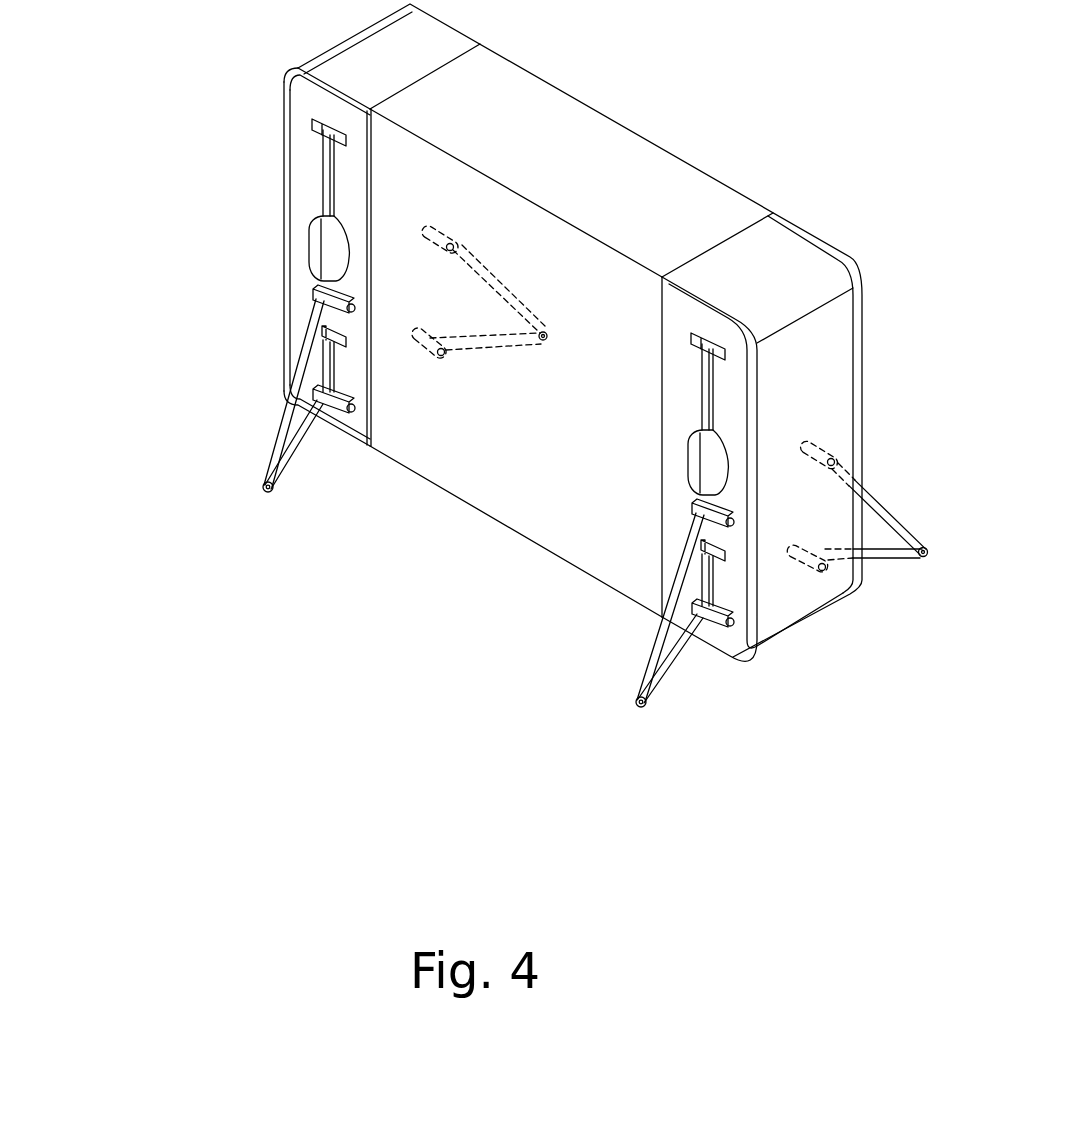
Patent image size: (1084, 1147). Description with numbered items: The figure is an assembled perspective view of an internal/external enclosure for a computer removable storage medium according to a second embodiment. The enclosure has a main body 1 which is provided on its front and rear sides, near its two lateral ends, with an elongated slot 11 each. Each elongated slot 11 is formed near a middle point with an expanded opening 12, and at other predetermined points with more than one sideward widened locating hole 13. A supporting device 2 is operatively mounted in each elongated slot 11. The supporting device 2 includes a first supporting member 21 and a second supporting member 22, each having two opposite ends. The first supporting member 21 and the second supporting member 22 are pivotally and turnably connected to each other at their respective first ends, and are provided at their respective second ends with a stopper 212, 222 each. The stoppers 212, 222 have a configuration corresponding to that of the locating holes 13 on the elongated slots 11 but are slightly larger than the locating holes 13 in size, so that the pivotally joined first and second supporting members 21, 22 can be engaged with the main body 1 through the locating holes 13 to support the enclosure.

The main body 1 is at (749, 137).
The elongated slot 11 is at (333, 183).
The expanded opening 12 is at (327, 245).
The locating hole 13 is at (313, 114).
The supporting device 2 is at (202, 380).
The first supporting member 21 is at (280, 442).
The stopper 212 is at (322, 290).
The second supporting member 22 is at (288, 467).
The stopper 222 is at (347, 427).